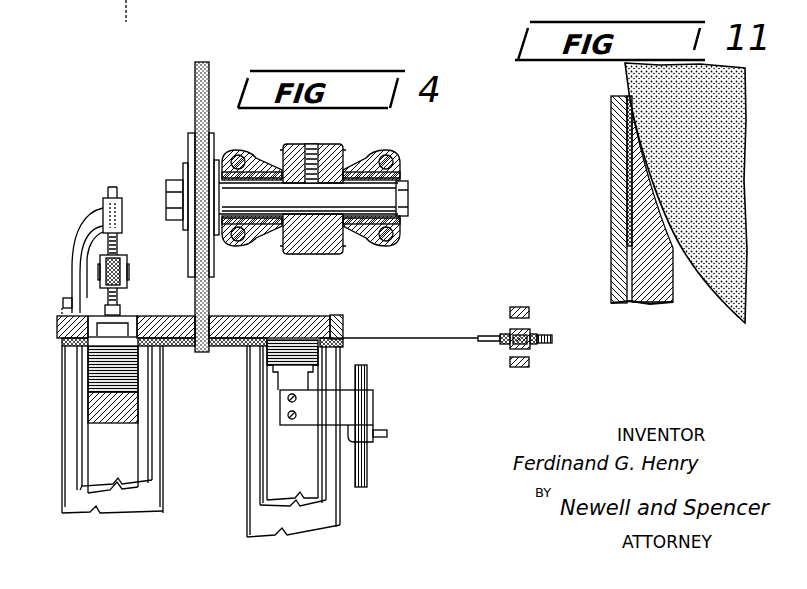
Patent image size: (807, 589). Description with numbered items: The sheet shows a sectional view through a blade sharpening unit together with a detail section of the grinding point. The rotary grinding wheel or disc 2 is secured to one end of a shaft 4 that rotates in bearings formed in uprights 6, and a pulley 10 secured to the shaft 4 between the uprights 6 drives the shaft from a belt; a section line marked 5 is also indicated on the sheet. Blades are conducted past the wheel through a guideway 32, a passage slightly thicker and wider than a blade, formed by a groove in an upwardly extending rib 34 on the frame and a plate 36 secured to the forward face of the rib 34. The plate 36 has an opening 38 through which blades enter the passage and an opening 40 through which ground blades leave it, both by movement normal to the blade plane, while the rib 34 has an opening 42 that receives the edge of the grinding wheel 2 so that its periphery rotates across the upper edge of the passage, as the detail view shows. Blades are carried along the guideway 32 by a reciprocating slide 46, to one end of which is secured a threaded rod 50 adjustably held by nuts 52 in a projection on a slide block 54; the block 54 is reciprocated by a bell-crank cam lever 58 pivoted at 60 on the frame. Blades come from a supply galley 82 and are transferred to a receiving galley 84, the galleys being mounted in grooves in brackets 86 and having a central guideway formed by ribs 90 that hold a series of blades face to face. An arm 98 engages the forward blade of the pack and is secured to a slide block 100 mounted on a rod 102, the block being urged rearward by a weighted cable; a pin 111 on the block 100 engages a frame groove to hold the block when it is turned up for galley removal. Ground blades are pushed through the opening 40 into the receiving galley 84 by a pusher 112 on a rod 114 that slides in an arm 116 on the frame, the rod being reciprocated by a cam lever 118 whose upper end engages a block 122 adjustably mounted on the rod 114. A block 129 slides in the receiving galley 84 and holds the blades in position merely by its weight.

In FIG. 4, the grinding wheel 2 is at (195, 79).
In FIG. 11, the grinding wheel 2 is at (733, 126).
In FIG. 4, the shaft 4 is at (405, 197).
In FIG. 4, the section line 5 is at (118, 9).
In FIG. 4, the uprights 6 is at (252, 163).
In FIG. 4, the pulley 10 is at (292, 156).
In FIG. 4, the guideway 32 is at (338, 316).
In FIG. 11, the guideway 32 is at (630, 204).
In FIG. 4, the rib 34 is at (298, 315).
In FIG. 11, the rib 34 is at (675, 303).
In FIG. 4, the plate 36 is at (238, 347).
In FIG. 11, the plate 36 is at (614, 166).
In FIG. 4, the opening 38 is at (341, 342).
In FIG. 4, the opening 40 is at (103, 343).
In FIG. 4, the opening 42 is at (223, 315).
In FIG. 11, the opening 42 is at (657, 221).
In FIG. 4, the slide 46 is at (437, 337).
In FIG. 4, the threaded rod 50 is at (543, 335).
In FIG. 4, the nuts 52 is at (507, 349).
In FIG. 4, the slide block 54 is at (527, 329).
In FIG. 4, the cam lever 58 is at (516, 307).
In FIG. 4, the pivot 60 is at (450, 6).
In FIG. 4, the galley 82 is at (277, 441).
In FIG. 4, the galley 84 is at (134, 436).
In FIG. 4, the brackets 86 is at (65, 498).
In FIG. 4, the ribs 90 is at (80, 459).
In FIG. 4, the arm 98 is at (285, 376).
In FIG. 4, the slide block 100 is at (362, 403).
In FIG. 4, the rod 102 is at (366, 465).
In FIG. 4, the pin 111 is at (388, 433).
In FIG. 4, the pusher 112 is at (134, 315).
In FIG. 4, the rod 114 is at (119, 243).
In FIG. 4, the arm 116 is at (101, 222).
In FIG. 4, the cam lever 118 is at (129, 273).
In FIG. 4, the block 122 is at (100, 261).
In FIG. 4, the block 129 is at (88, 411).